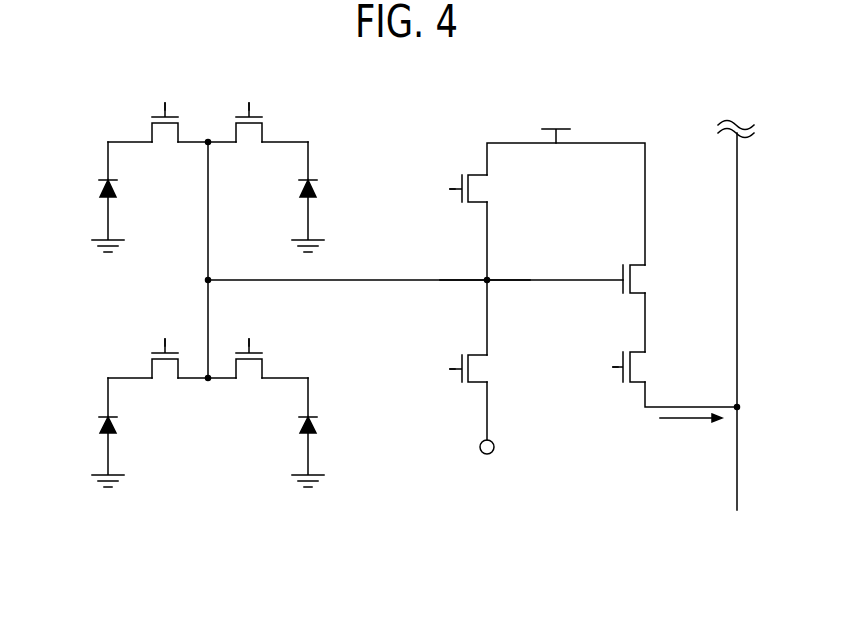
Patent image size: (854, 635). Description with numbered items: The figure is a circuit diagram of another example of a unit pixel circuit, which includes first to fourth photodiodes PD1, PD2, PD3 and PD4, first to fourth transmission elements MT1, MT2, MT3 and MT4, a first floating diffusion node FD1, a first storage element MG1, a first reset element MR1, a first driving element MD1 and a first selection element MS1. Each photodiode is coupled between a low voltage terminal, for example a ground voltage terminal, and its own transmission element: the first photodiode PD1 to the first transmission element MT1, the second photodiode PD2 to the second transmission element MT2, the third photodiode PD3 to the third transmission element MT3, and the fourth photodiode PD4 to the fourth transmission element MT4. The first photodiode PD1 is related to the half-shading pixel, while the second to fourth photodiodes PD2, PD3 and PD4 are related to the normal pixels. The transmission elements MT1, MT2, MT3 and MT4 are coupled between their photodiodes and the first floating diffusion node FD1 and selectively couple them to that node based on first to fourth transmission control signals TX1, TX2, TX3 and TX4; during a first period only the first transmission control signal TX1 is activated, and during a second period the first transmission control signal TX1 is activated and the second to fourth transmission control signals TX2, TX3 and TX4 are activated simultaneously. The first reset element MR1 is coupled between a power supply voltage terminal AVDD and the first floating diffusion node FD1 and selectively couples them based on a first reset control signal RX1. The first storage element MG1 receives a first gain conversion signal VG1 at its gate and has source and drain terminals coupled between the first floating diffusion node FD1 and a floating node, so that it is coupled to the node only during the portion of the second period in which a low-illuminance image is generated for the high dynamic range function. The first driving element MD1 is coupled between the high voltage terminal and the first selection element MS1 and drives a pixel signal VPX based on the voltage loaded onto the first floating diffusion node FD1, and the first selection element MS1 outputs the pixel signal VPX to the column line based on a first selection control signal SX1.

The first transmission element MT1 is at (165, 125).
The second transmission element MT2 is at (249, 137).
The third transmission element MT3 is at (165, 373).
The fourth transmission element MT4 is at (249, 373).
The first transmission control signal TX1 is at (164, 94).
The second transmission control signal TX2 is at (248, 94).
The third transmission control signal TX3 is at (164, 330).
The fourth transmission control signal TX4 is at (248, 330).
The first photodiode PD1 is at (80, 197).
The second photodiode PD2 is at (323, 197).
The third photodiode PD3 is at (93, 432).
The fourth photodiode PD4 is at (324, 432).
The power supply voltage terminal AVDD is at (555, 123).
The first reset element MR1 is at (486, 188).
The first reset control signal RX1 is at (435, 189).
The first floating diffusion node FD1 is at (485, 266).
The first storage element MG1 is at (486, 370).
The first gain conversion signal VG1 is at (435, 372).
The first driving element MD1 is at (653, 279).
The first selection element MS1 is at (647, 367).
The first selection control signal SX1 is at (596, 369).
The pixel signal VPX is at (691, 432).